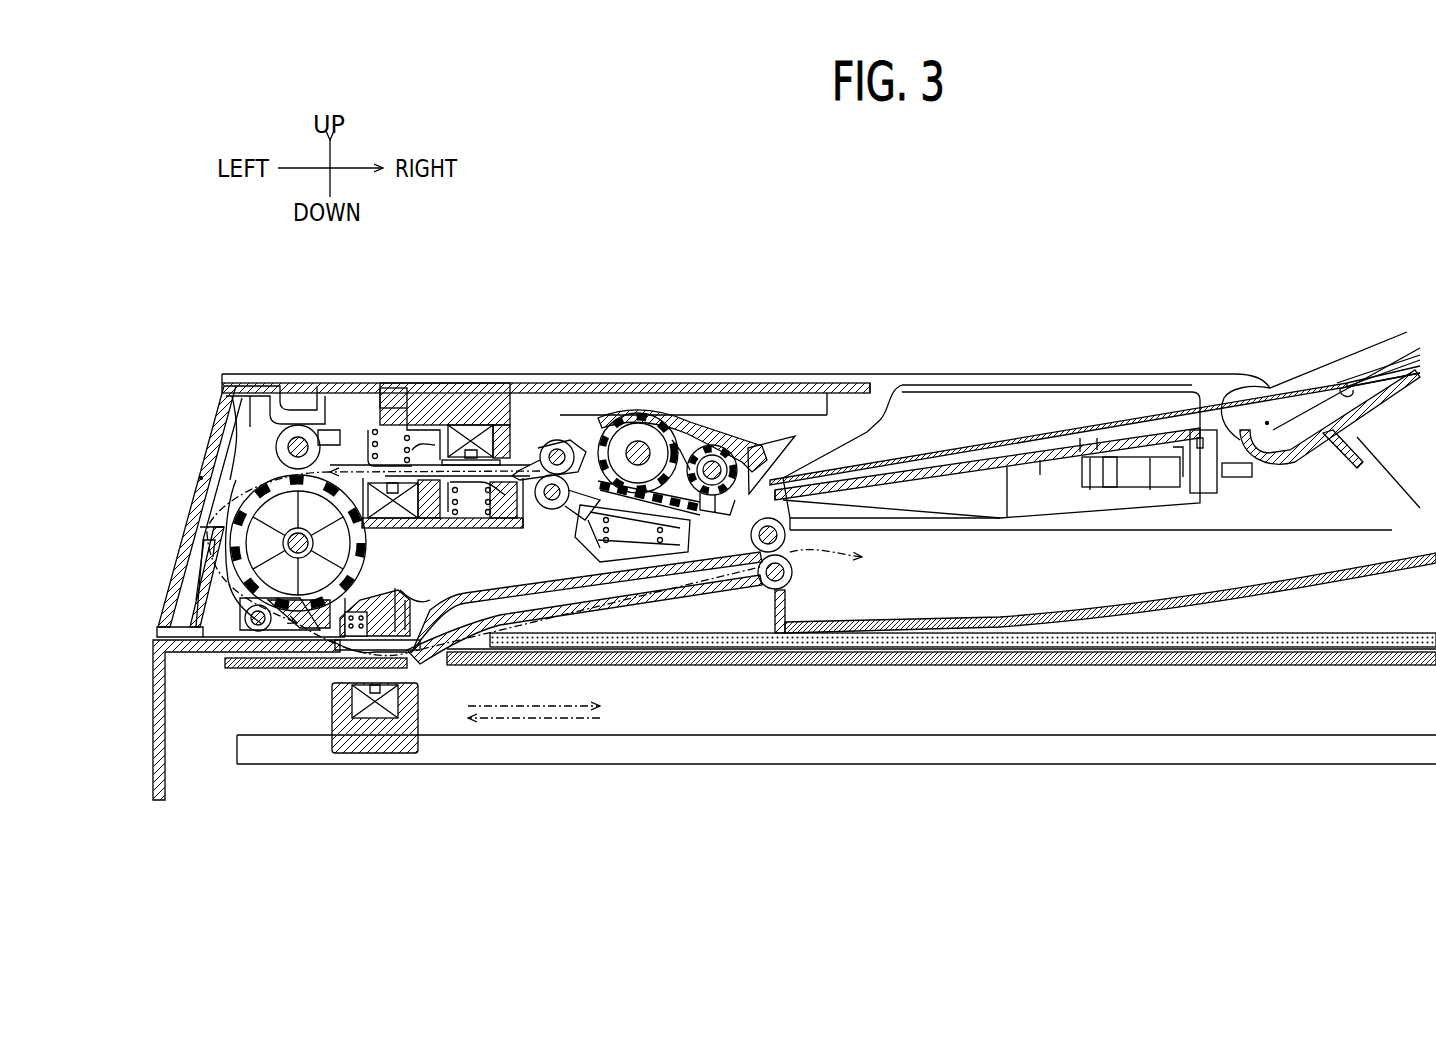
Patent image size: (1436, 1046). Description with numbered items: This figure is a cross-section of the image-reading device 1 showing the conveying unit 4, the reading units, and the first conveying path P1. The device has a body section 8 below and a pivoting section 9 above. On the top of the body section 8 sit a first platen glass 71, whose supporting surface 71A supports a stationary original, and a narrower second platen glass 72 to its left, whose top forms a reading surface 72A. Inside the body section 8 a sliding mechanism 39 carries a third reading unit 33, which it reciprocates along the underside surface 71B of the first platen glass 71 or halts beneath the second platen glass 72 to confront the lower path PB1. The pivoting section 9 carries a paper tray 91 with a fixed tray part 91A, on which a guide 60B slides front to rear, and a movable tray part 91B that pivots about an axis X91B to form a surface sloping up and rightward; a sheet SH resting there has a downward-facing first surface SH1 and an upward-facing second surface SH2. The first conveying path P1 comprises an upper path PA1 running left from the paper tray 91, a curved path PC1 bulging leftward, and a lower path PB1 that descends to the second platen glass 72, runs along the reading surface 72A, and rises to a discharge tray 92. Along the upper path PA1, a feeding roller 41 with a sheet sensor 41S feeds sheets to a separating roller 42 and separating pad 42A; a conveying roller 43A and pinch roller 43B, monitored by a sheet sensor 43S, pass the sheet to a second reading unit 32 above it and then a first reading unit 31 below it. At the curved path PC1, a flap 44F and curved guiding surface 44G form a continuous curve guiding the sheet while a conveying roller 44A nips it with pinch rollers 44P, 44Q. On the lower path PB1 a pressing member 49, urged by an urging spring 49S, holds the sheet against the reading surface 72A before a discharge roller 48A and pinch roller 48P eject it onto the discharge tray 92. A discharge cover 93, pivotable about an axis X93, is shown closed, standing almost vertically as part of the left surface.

The image-reading device 1 is at (964, 210).
The conveying unit 4 is at (597, 415).
The body section 8 is at (152, 795).
The pivoting section 9 is at (152, 626).
The first reading unit 31 is at (412, 470).
The second reading unit 32 is at (493, 430).
The third reading unit 33 is at (375, 710).
The sliding mechanism 39 is at (412, 773).
The feeding roller 41 is at (713, 443).
The sheet sensor 41S is at (677, 440).
The separating roller 42 is at (642, 413).
The separating pad 42A is at (600, 546).
The conveying roller 43A is at (563, 438).
The pinch roller 43B is at (546, 498).
The sheet sensor 43S is at (540, 440).
The conveying roller 44A is at (312, 432).
The flap 44F is at (242, 385).
The curved guiding surface 44G is at (230, 527).
The pinch roller 44P is at (296, 424).
The pinch roller 44Q is at (246, 628).
The discharge roller 48A is at (760, 548).
The pinch roller 48P is at (788, 580).
The pressing member 49 is at (364, 600).
The urging spring 49S is at (400, 595).
The guide 60B is at (907, 415).
The first platen glass 71 is at (1056, 672).
The supporting surface 71A is at (1307, 641).
The underside surface 71B is at (1147, 668).
The second platen glass 72 is at (280, 678).
The reading surface 72A is at (343, 660).
The paper tray 91 is at (1408, 388).
The fixed tray part 91A is at (1040, 463).
The movable tray part 91B is at (1363, 402).
The discharge tray 92 is at (1229, 588).
The discharge cover 93 is at (213, 405).
The first conveying path P1 is at (842, 564).
The upper path PA1 is at (343, 430).
The lower path PB1 is at (592, 592).
The curved path PC1 is at (235, 556).
The sheet SH is at (1212, 412).
The first surface SH1 is at (1348, 390).
The second surface SH2 is at (1382, 360).
The axis X91B is at (1267, 422).
The axis X93 is at (200, 478).